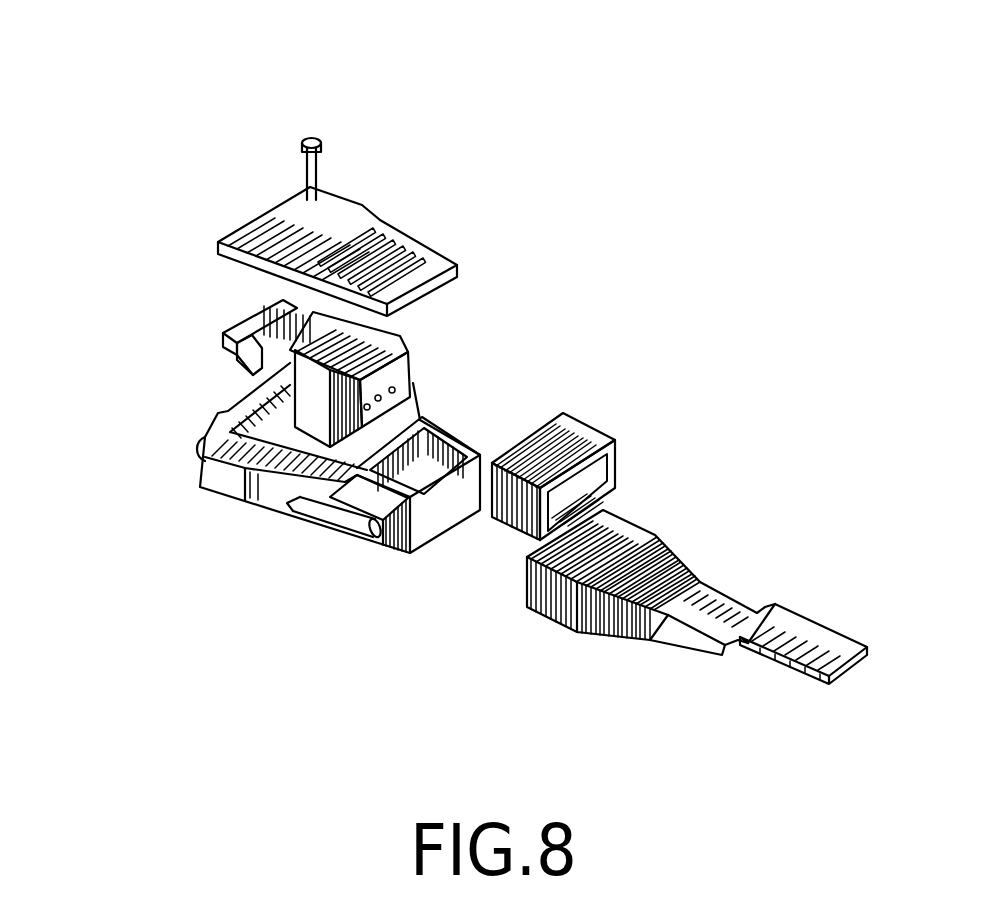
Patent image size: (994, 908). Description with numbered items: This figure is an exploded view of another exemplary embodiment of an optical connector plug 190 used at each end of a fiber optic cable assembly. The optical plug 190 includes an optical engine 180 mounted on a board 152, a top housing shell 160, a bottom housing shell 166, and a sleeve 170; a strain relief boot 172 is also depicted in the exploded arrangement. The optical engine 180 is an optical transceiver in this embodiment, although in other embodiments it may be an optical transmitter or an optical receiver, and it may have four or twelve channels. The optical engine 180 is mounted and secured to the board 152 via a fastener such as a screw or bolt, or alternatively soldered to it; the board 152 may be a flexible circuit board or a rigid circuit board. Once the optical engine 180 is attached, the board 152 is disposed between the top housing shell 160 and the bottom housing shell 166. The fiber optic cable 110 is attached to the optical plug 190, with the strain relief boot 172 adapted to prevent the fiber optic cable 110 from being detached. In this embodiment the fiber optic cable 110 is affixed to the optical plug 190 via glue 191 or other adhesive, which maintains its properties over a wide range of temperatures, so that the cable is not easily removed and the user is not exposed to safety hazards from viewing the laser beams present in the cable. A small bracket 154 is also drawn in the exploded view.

The optical plug 190 is at (662, 165).
The top housing shell 160 is at (358, 200).
The contact bracket 154 is at (250, 318).
The board 152 is at (237, 368).
The optical engine 180 is at (420, 383).
The bottom housing shell 166 is at (247, 510).
The sleeve 170 is at (578, 424).
The glue 191 is at (585, 480).
The strain relief boot 172 is at (657, 533).
The fiber optic cable 110 is at (788, 668).